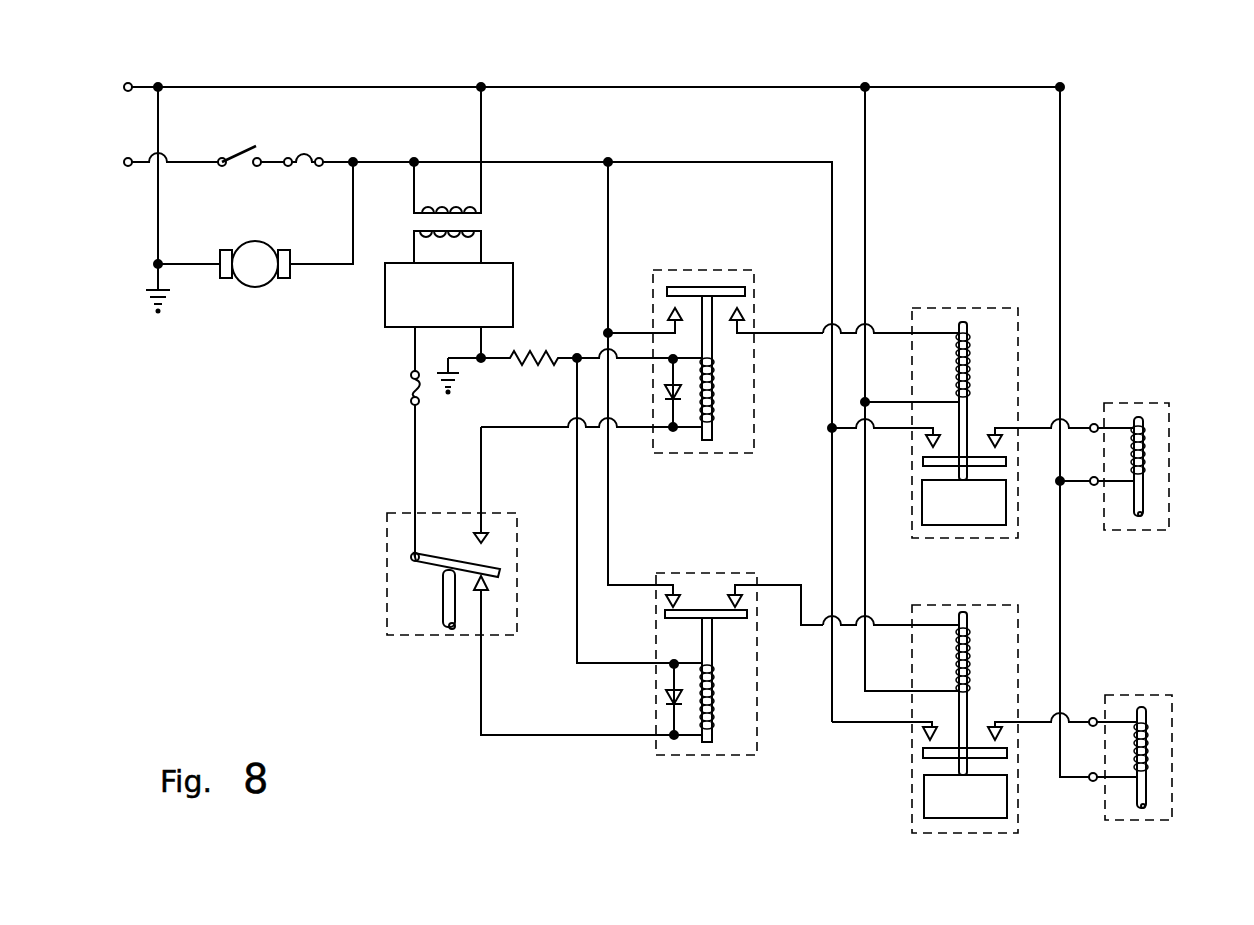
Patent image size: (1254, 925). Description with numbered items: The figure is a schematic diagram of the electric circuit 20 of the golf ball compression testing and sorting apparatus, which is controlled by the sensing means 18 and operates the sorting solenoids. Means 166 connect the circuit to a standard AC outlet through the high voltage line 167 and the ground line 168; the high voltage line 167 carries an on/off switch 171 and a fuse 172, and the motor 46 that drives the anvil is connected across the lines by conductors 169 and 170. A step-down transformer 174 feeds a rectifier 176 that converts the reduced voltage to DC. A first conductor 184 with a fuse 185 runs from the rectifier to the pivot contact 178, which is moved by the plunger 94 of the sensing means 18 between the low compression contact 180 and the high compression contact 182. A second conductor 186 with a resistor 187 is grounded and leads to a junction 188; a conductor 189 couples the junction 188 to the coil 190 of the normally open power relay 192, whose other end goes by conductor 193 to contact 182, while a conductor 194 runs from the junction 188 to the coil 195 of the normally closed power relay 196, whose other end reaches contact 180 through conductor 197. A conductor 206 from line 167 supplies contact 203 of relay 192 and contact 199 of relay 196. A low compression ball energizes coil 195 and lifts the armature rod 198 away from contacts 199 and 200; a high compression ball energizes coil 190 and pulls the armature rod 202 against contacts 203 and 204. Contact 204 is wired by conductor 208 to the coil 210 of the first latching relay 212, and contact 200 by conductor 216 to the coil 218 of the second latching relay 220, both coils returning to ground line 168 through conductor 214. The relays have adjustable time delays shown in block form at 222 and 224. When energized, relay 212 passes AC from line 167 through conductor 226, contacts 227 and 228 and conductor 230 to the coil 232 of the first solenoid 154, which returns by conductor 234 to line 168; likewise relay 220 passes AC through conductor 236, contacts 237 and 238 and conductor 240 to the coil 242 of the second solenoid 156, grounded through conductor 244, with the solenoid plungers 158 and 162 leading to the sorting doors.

The electric circuit 20 is at (268, 507).
The sensing means 18 is at (386, 610).
The motor 46 is at (262, 289).
The plunger 94 is at (446, 600).
The first solenoid 154 is at (1170, 417).
The second solenoid 156 is at (1170, 706).
The solenoid plunger 1 158 is at (1143, 497).
The solenoid plunger 2 162 is at (1150, 796).
The means for connection to a source of electric power 166 is at (103, 108).
The high voltage line 167 is at (210, 160).
The ground line 168 is at (218, 84).
The conductor 169 is at (353, 229).
The conductor 170 is at (158, 229).
The on/off switch 171 is at (224, 150).
The fuse 172 is at (298, 160).
The step-down transformer 174 is at (480, 224).
The rectifier 176 is at (385, 302).
The pivot contact 178 is at (435, 568).
The contact 180 is at (485, 593).
The contact 182 is at (488, 540).
The first conductor 184 is at (416, 432).
The fuse 185 is at (410, 390).
The second conductor 186 is at (498, 365).
The resistor 187 is at (553, 350).
The junction 188 is at (572, 362).
The conductor 189 is at (600, 352).
The coil 190 is at (714, 405).
The normally open power relay 192 is at (690, 455).
The conductor 193 is at (484, 434).
The conductor 194 is at (572, 398).
The coil 195 is at (714, 710).
The normally closed power relay 196 is at (700, 757).
The conductor 197 is at (570, 740).
The armature rod 198 is at (712, 645).
The contact 199 is at (666, 596).
The contact 200 is at (745, 602).
The armature rod 202 is at (710, 348).
The contact 203 is at (668, 312).
The contact 204 is at (744, 312).
The conductor 206 is at (606, 296).
The conductor 208 is at (816, 336).
The coil 210 is at (968, 350).
The first latching relay 212 is at (1003, 310).
The conductor 214 is at (867, 220).
The conductor 216 is at (818, 636).
The coil 218 is at (968, 655).
The second latching relay 220 is at (1018, 622).
The adjustable time delay 222 is at (1006, 496).
The adjustable time delay 224 is at (924, 815).
The conductor 226 is at (830, 434).
The contact 227 is at (928, 446).
The contact 228 is at (992, 428).
The conductor 230 is at (1040, 428).
The coil 232 is at (1148, 440).
The conductor 234 is at (1068, 490).
The conductor 236 is at (866, 725).
The contact 237 is at (915, 742).
The contact 238 is at (1005, 738).
The conductor 240 is at (1040, 722).
The coil 242 is at (1150, 752).
The conductor 244 is at (1080, 785).